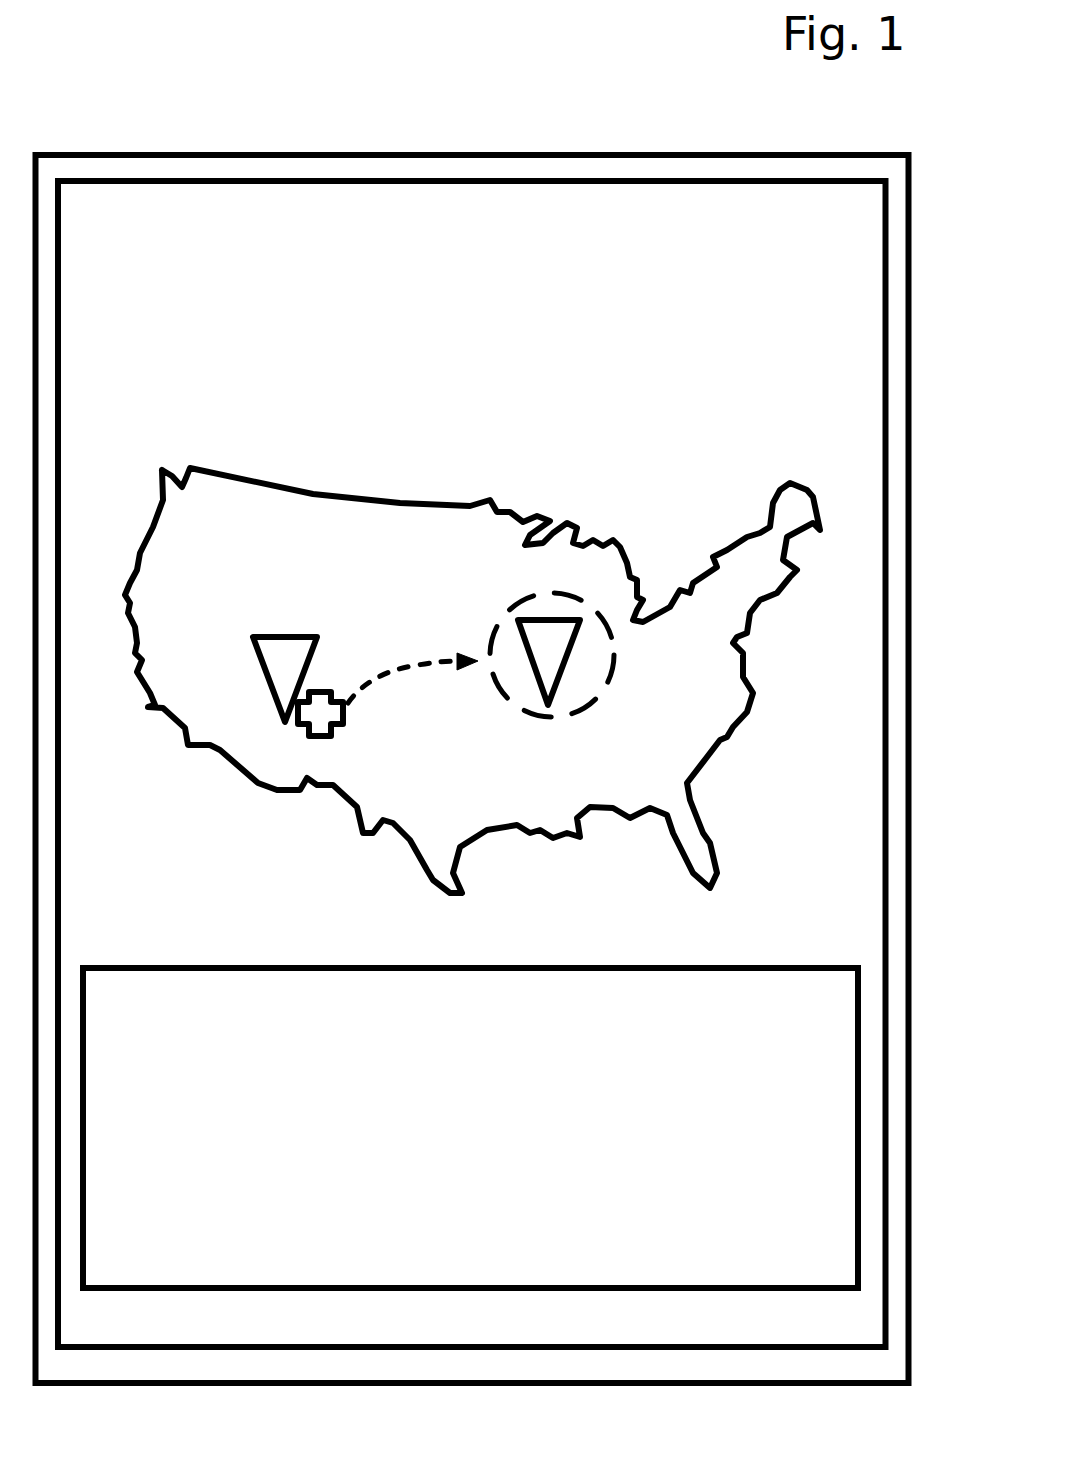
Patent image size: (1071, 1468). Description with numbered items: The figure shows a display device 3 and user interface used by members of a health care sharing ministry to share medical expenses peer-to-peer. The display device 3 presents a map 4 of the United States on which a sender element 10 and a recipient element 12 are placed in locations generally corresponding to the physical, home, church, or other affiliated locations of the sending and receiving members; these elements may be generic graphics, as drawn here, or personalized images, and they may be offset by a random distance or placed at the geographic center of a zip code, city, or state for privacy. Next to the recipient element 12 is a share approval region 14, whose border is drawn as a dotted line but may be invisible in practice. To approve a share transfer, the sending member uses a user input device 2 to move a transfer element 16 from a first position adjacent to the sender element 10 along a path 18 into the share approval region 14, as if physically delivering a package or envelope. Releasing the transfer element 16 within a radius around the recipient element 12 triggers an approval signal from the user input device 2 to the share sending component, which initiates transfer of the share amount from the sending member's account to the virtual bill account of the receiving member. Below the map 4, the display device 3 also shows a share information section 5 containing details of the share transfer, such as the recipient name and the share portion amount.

The user input device 2 is at (908, 377).
The display device 3 is at (883, 290).
The map 4 is at (233, 472).
The share information section 5 is at (158, 965).
The sender element 10 is at (285, 679).
The recipient element 12 is at (549, 662).
The share approval region 14 is at (617, 660).
The transfer element 16 is at (333, 732).
The path 18 is at (420, 665).